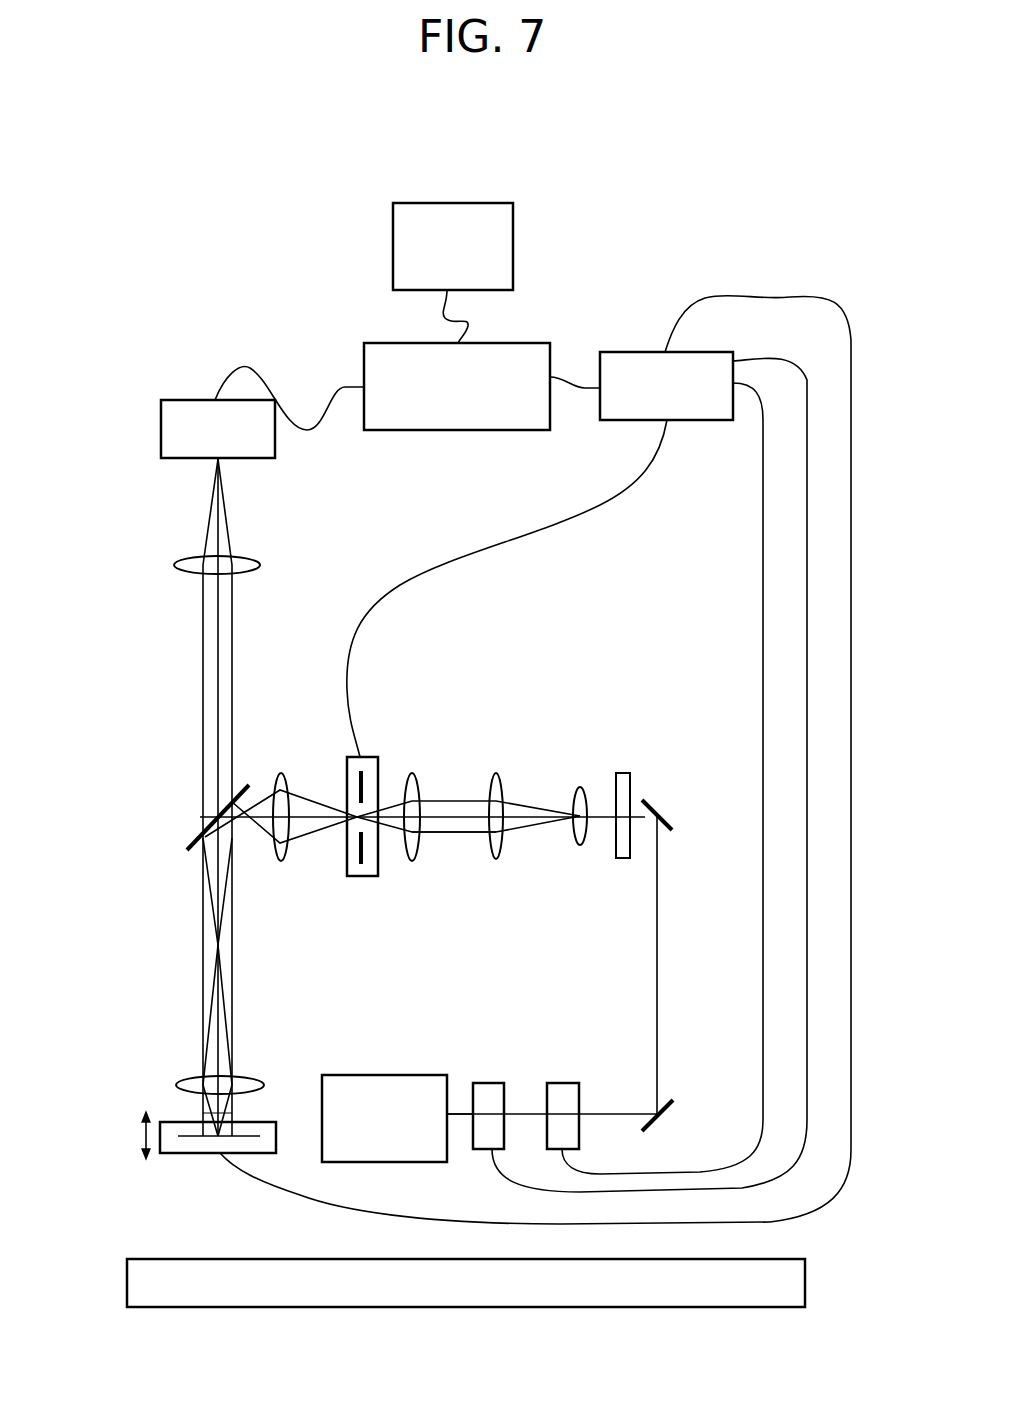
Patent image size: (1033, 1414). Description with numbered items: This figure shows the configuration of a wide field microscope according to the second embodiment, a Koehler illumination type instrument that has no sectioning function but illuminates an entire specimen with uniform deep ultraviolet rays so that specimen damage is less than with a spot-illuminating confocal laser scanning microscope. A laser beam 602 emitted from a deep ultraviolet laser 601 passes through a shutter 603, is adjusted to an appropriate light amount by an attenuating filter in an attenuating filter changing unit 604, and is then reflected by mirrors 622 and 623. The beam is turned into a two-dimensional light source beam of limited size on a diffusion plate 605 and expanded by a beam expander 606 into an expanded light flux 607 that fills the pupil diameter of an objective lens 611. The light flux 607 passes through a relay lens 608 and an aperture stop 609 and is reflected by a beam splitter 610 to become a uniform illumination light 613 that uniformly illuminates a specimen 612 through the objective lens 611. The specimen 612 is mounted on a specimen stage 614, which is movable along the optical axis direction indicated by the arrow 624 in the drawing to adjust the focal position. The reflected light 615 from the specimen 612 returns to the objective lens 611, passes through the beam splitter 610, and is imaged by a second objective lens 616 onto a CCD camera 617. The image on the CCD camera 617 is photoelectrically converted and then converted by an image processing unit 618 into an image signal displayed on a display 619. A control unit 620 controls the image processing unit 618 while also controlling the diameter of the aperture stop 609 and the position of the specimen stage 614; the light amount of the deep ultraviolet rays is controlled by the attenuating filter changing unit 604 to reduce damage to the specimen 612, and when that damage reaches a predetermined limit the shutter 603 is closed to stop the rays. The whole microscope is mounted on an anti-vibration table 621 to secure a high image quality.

The deep ultraviolet laser 601 is at (406, 1075).
The laser beam 602 is at (460, 1116).
The shutter 603 is at (489, 1083).
The attenuating filter changing unit 604 is at (563, 1083).
The diffusion plate 605 is at (620, 773).
The beam expander 606 is at (588, 870).
The expanded light flux 607 is at (448, 833).
The relay lens 608 is at (418, 878).
The aperture stop 609 is at (370, 754).
The beam splitter 610 is at (193, 828).
The objective lens 611 is at (245, 1077).
The specimen 612 is at (187, 1153).
The uniform illumination light 613 is at (228, 1112).
The specimen stage 614 is at (263, 1153).
The reflected light 615 is at (203, 1113).
The second objective lens 616 is at (242, 557).
The CCD camera 617 is at (181, 400).
The image processing unit 618 is at (487, 430).
The display 619 is at (470, 203).
The control unit 620 is at (627, 352).
The anti-vibration table 621 is at (252, 1259).
The mirror 622 is at (666, 1094).
The mirror 623 is at (655, 799).
The vertical movement direction 624 is at (140, 1135).